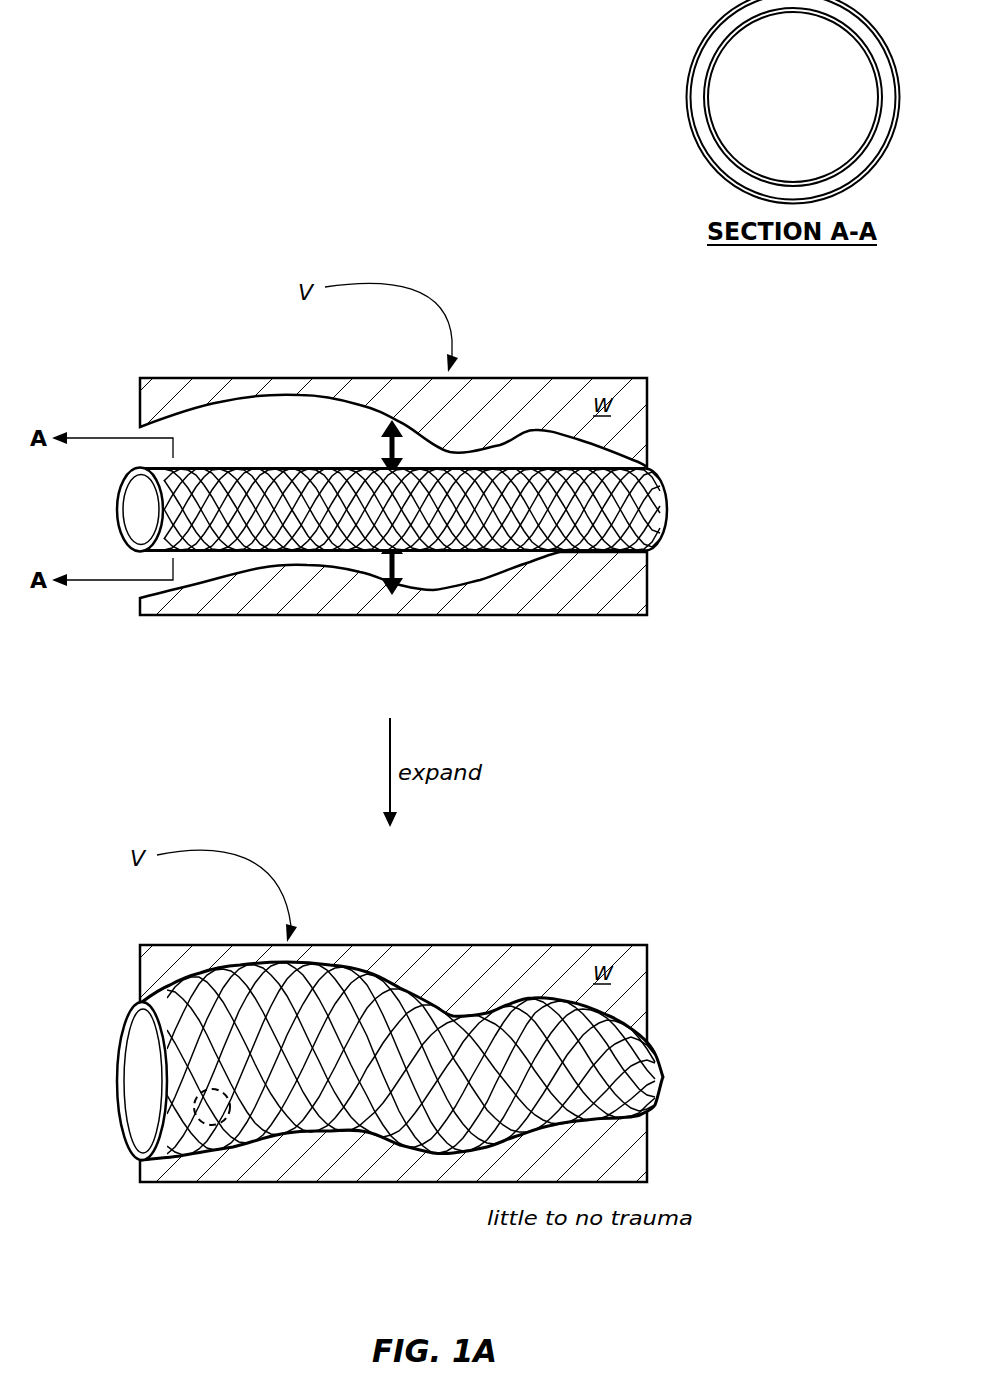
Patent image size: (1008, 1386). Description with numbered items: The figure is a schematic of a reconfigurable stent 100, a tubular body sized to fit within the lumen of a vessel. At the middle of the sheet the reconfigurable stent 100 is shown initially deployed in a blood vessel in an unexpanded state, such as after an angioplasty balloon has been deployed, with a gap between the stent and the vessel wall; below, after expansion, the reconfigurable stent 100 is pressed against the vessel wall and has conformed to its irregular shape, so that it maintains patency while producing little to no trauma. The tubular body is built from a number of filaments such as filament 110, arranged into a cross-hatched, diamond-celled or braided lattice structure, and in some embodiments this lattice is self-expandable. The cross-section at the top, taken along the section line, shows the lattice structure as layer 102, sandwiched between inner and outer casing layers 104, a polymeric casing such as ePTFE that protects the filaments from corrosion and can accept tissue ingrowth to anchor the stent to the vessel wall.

The reconfigurable stent 100 is at (684, 510).
The layer 102 is at (693, 90).
The casing layers 104 is at (693, 63).
The filament 110 is at (200, 1124).